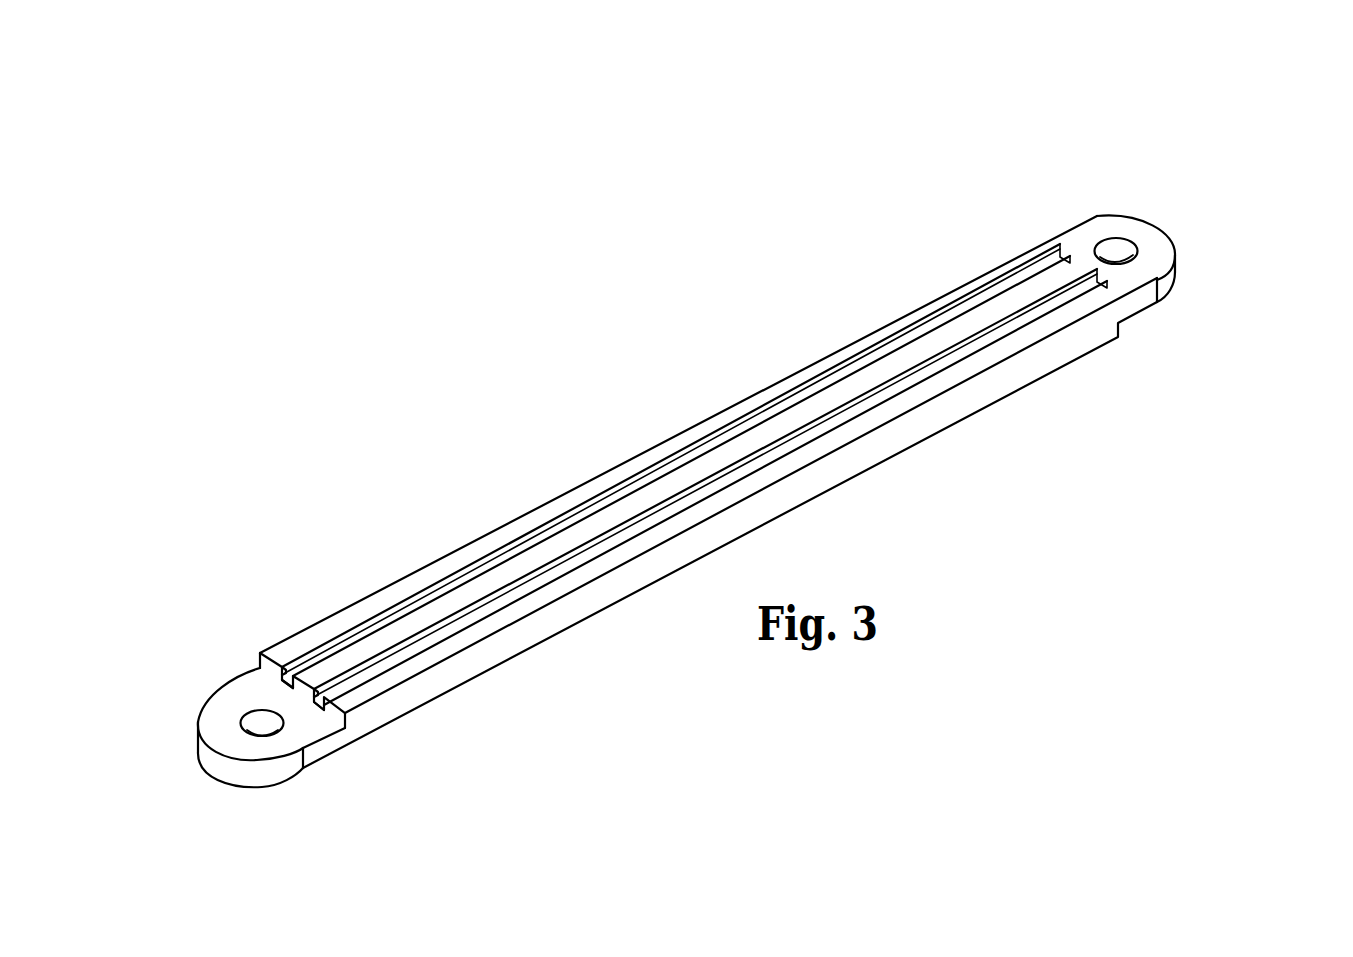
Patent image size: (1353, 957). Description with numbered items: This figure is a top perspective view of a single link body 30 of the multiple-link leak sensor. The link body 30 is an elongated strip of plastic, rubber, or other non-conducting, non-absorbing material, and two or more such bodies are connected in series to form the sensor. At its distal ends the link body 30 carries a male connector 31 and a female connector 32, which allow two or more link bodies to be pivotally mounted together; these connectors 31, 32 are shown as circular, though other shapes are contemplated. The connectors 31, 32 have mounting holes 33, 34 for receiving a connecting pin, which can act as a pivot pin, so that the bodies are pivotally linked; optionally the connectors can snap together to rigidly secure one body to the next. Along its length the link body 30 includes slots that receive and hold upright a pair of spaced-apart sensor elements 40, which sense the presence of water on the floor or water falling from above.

The link body 30 is at (707, 484).
The male connector 31 is at (1157, 250).
The female connector 32 is at (198, 755).
The mounting hole 33 is at (1122, 242).
The mounting hole 34 is at (250, 737).
The sensor elements 40 is at (840, 378).